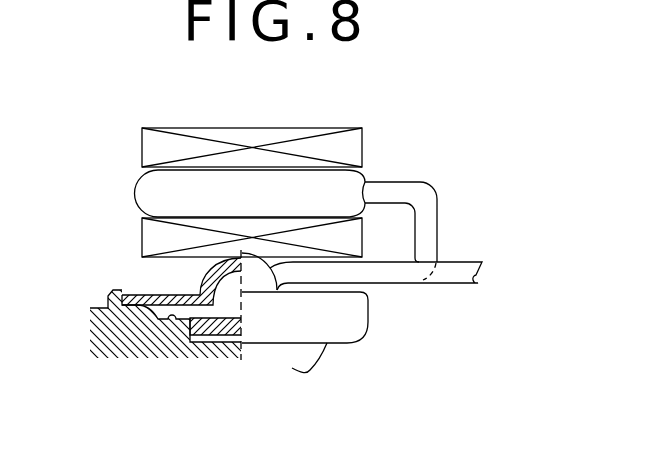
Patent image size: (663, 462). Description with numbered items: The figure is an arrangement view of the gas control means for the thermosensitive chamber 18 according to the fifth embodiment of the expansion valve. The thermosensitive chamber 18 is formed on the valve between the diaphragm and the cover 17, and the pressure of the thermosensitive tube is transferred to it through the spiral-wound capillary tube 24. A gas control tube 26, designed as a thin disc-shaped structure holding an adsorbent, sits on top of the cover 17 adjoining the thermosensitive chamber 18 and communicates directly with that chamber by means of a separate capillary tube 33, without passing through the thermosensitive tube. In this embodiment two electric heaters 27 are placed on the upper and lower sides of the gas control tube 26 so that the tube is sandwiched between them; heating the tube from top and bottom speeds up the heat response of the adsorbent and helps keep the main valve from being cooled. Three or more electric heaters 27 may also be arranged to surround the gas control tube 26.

The electric heater 27 is at (140, 148).
The gas control tube 26 is at (133, 188).
The capillary tube 33 is at (437, 218).
The capillary tube 24 is at (450, 283).
The cover 17 is at (168, 287).
The thermosensitive chamber 18 is at (216, 313).